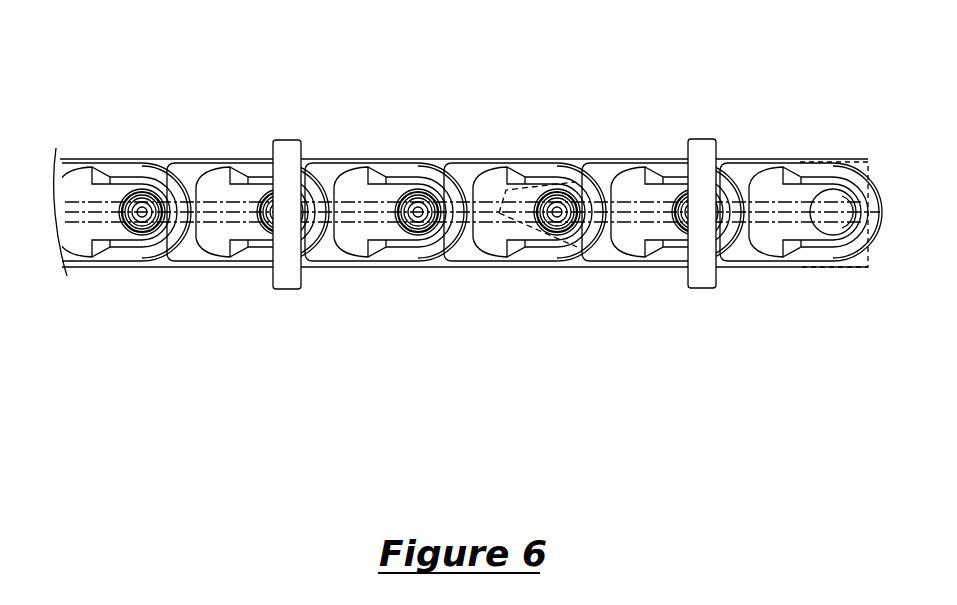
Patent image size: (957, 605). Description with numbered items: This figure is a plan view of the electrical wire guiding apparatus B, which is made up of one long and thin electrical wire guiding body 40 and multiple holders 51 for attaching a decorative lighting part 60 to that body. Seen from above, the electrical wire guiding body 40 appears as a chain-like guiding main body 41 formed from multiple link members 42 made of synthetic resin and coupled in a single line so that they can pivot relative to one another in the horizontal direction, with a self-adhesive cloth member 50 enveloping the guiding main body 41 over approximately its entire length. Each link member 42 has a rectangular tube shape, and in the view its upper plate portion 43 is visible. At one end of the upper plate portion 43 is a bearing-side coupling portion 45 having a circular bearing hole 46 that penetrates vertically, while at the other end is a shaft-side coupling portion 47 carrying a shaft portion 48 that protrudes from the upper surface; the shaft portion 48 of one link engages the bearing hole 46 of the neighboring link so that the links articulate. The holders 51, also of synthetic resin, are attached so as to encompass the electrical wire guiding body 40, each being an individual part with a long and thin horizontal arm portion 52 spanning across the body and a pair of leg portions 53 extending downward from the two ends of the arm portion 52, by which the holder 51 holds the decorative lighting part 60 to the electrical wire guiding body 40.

The electrical wire guiding body 40 is at (654, 93).
The guiding main body 41 is at (561, 102).
The link member 42 is at (493, 237).
The upper plate portion 43 is at (487, 190).
The bearing-side coupling portion 45 is at (588, 183).
The bearing hole 46 is at (548, 232).
The shaft-side coupling portion 47 is at (499, 213).
The shaft portion 48 is at (550, 197).
The self-adhesive cloth member 50 is at (432, 158).
The holder 51 is at (300, 289).
The arm portion 52 is at (289, 185).
The leg portion 53 is at (277, 140).
The decorative lighting part 60 is at (353, 205).
The electrical wire guiding apparatus B is at (804, 62).